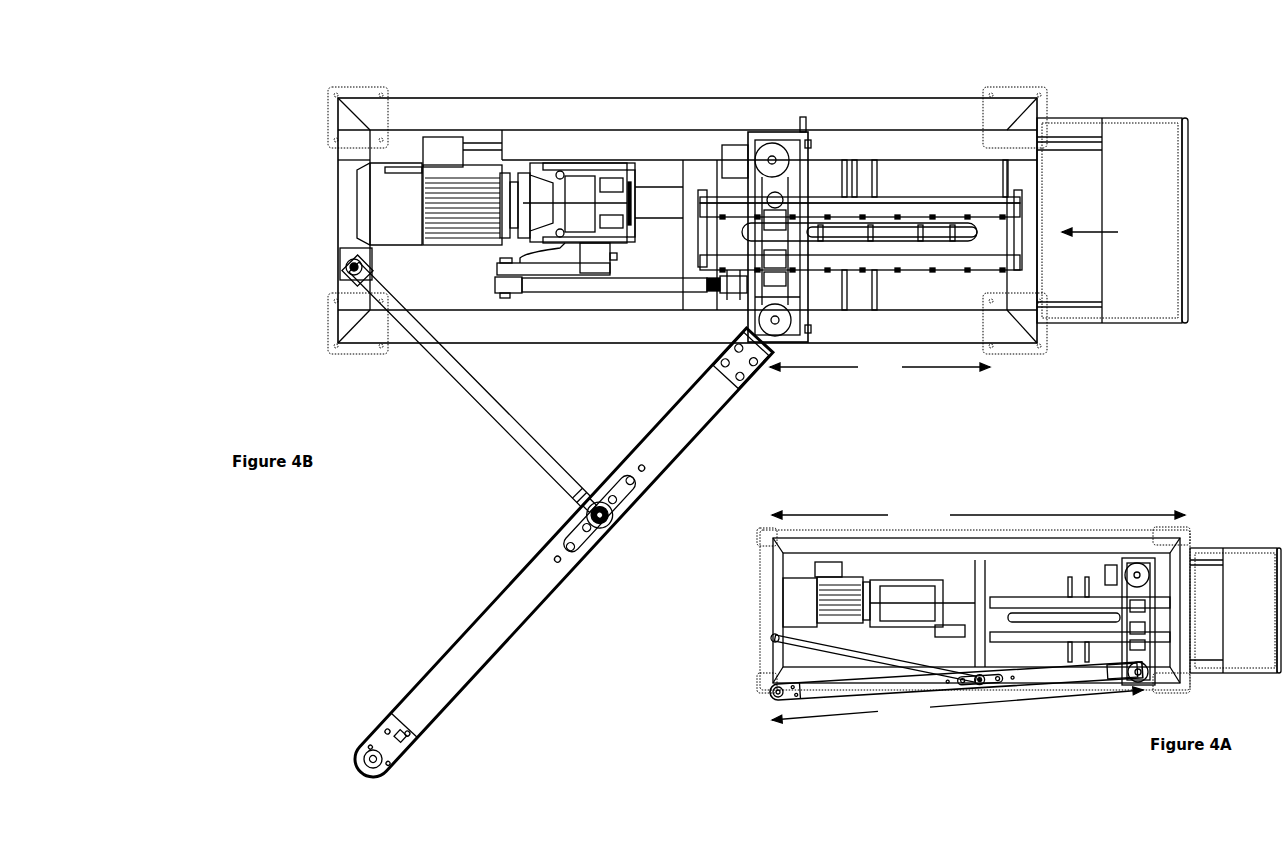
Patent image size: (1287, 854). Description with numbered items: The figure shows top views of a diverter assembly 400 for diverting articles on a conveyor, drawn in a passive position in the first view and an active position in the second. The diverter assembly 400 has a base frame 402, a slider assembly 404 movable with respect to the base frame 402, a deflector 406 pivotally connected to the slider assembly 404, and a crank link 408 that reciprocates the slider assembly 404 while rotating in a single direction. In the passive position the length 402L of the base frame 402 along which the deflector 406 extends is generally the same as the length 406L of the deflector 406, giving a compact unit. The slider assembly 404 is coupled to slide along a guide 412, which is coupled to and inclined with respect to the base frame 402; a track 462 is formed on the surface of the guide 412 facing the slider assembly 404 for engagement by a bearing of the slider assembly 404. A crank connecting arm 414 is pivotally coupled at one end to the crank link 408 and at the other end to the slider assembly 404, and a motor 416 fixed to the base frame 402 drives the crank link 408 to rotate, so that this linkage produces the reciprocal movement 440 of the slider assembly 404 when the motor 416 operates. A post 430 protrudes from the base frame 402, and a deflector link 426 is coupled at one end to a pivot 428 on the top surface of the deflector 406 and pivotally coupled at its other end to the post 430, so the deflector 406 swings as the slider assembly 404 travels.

In FIG. 4B, the diverter assembly 400 is at (318, 100).
In FIG. 4B, the base frame 402 is at (1012, 100).
In FIG. 4B, the slider assembly 404 is at (772, 200).
In FIG. 4B, the deflector 406 is at (563, 580).
In FIG. 4B, the crank link 408 is at (590, 258).
In FIG. 4B, the guide 412 is at (910, 210).
In FIG. 4B, the crank connecting arm 414 is at (672, 283).
In FIG. 4B, the motor 416 is at (395, 170).
In FIG. 4B, the deflector link 426 is at (437, 349).
In FIG. 4B, the pivot 428 is at (643, 566).
In FIG. 4B, the post 430 is at (340, 256).
In FIG. 4B, the reciprocal movement 440 is at (880, 367).
In FIG. 4B, the track 462 is at (1002, 258).
In FIG. 4A, the length of the base frame 402L is at (1019, 600).
In FIG. 4A, the length of the deflector 406L is at (956, 678).